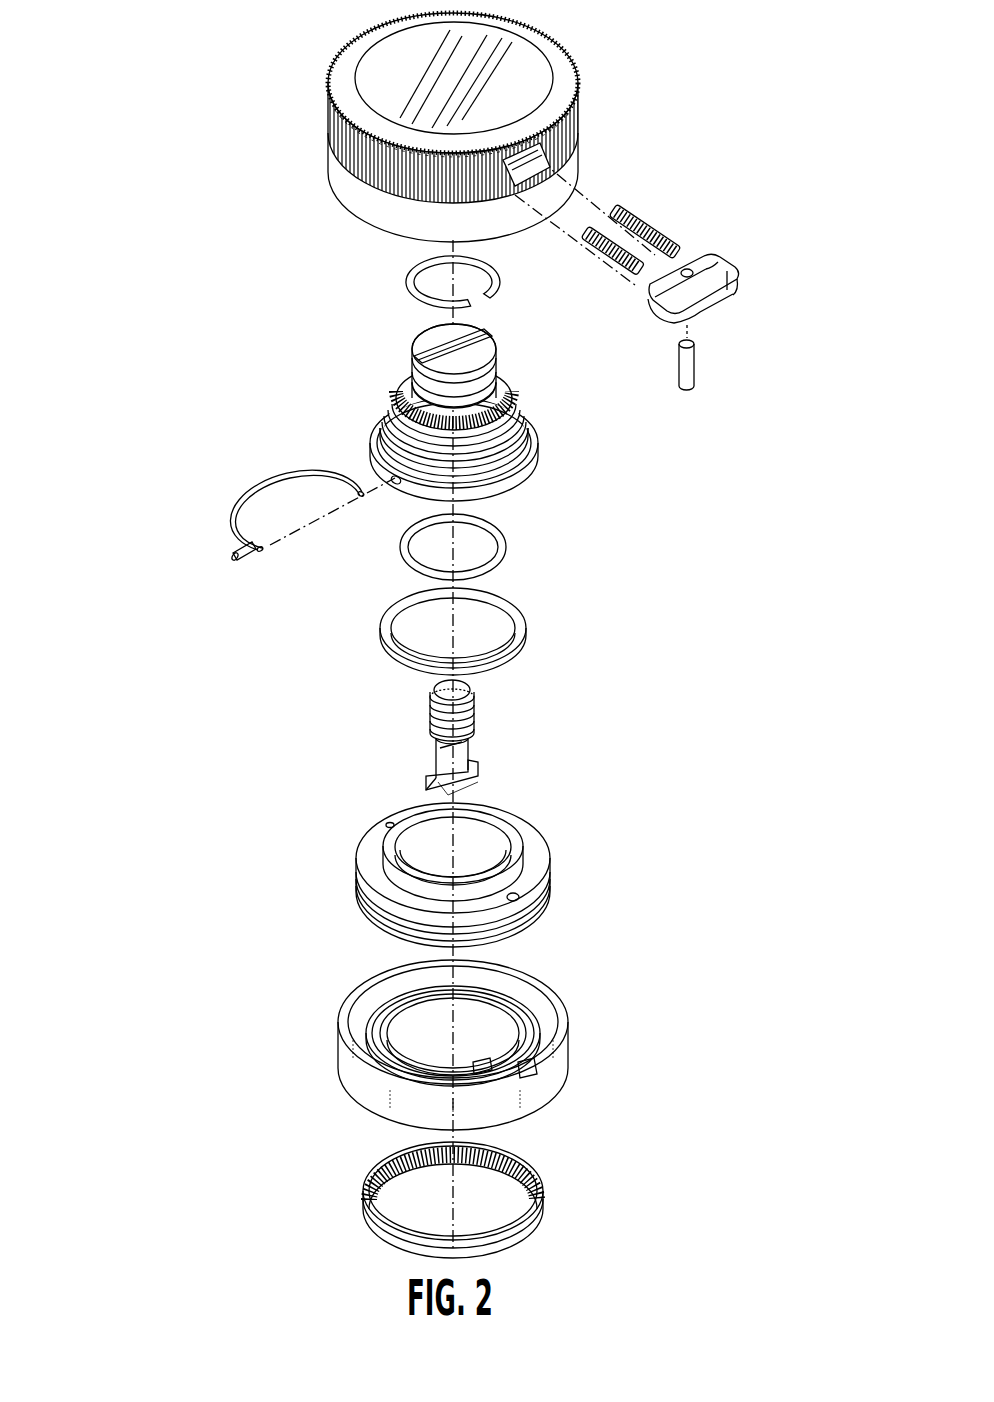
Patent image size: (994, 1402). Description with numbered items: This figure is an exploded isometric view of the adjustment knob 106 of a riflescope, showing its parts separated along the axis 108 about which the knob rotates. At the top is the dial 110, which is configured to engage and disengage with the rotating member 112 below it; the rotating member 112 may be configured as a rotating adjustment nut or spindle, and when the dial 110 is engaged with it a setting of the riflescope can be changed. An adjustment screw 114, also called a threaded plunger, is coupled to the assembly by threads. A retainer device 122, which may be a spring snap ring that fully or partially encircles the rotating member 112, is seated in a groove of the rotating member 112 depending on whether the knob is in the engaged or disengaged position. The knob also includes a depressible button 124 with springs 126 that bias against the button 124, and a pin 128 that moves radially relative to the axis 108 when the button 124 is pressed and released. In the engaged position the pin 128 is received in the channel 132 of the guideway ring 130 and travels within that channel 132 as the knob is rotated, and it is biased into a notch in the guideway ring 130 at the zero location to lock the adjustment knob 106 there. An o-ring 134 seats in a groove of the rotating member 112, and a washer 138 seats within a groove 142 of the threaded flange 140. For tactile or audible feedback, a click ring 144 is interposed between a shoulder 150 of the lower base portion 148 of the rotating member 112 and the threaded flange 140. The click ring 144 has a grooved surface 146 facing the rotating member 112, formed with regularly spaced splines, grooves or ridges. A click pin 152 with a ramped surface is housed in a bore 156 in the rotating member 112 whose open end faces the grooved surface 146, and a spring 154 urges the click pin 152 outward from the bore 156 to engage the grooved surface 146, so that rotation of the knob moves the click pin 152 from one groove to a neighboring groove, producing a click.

The adjustment knob 106 is at (114, 148).
The axis 108 is at (455, 793).
The dial 110 is at (575, 72).
The rotating member 112 is at (352, 352).
The adjustment screw 114 is at (468, 742).
The retainer device 122 is at (408, 284).
The depressible button 124 is at (728, 264).
The springs 126 is at (646, 222).
The pin 128 is at (697, 366).
The guideway ring 130 is at (566, 1072).
The channel 132 is at (556, 1016).
The o-ring 134 is at (507, 547).
The washer 138 is at (526, 634).
The threaded flange 140 is at (552, 897).
The groove 142 is at (538, 858).
The click ring 144 is at (545, 1212).
The grooved surface 146 is at (414, 1170).
The lower base portion 148 is at (532, 450).
The shoulder 150 is at (522, 483).
The click pin 152 is at (243, 568).
The spring 154 is at (254, 478).
The bore 156 is at (392, 476).